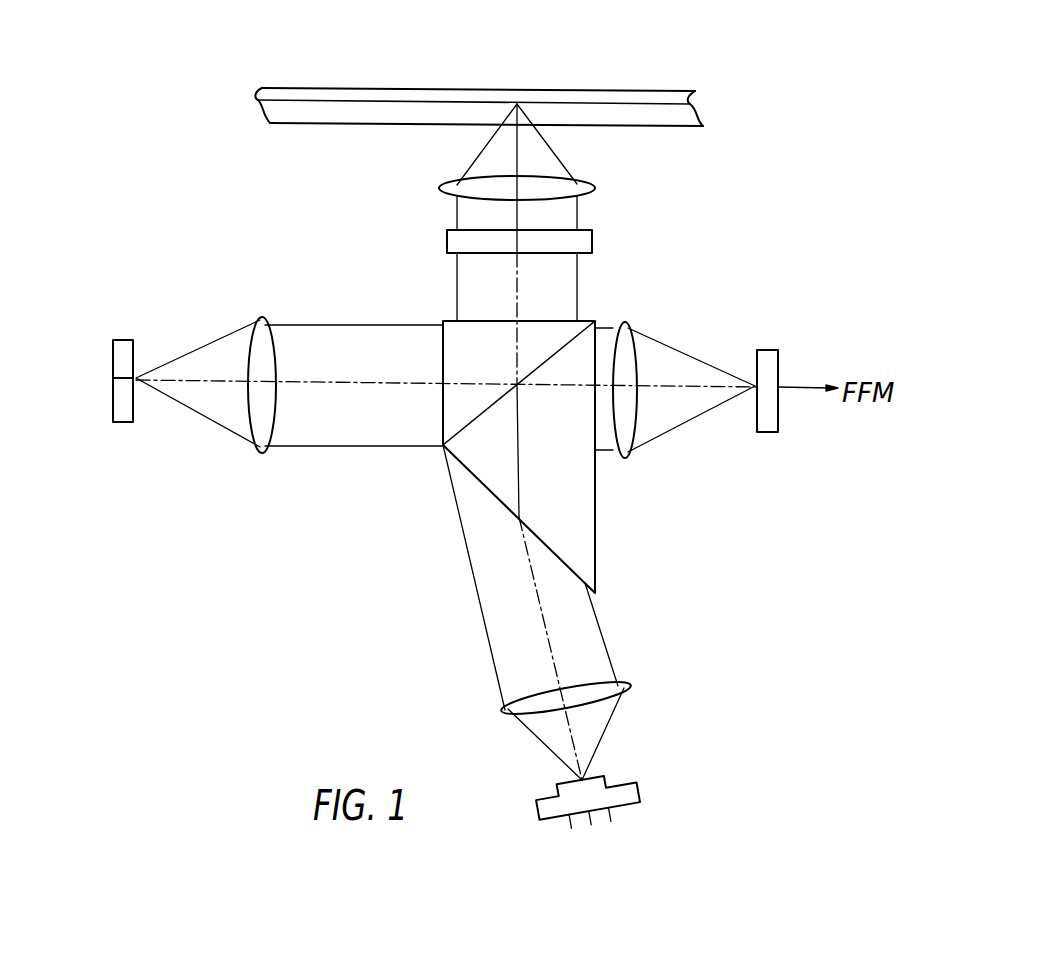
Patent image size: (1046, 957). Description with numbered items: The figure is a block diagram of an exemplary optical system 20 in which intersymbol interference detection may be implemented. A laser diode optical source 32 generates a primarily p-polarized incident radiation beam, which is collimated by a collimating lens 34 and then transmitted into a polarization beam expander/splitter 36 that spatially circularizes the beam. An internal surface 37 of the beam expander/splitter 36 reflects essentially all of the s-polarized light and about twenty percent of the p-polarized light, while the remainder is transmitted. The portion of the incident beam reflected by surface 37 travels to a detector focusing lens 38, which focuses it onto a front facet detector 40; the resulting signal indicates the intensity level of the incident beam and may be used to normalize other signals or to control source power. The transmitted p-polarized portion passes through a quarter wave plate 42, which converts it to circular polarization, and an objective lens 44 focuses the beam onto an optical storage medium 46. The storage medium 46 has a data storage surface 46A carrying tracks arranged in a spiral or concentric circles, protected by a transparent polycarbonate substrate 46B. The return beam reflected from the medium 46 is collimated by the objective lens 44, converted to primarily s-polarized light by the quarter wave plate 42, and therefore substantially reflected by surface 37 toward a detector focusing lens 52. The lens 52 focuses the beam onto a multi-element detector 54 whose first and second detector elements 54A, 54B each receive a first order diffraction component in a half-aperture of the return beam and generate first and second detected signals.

The optical system 20 is at (180, 124).
The laser diode optical source 32 is at (640, 793).
The collimating lens 34 is at (623, 685).
The polarization beam expander/splitter 36 is at (519, 429).
The internal surface 37 is at (460, 431).
The detector focusing lens 38 is at (627, 322).
The front facet detector 40 is at (780, 417).
The quarter wave plate 42 is at (593, 242).
The objective lens 44 is at (453, 188).
The optical storage medium 46 is at (498, 91).
The data storage surface 46A is at (362, 97).
The transparent polycarbonate substrate 46B is at (352, 113).
The detector focusing lens 52 is at (262, 318).
The multi-element detector 54 is at (110, 396).
The first detector element 54A is at (113, 352).
The second detector element 54B is at (135, 420).